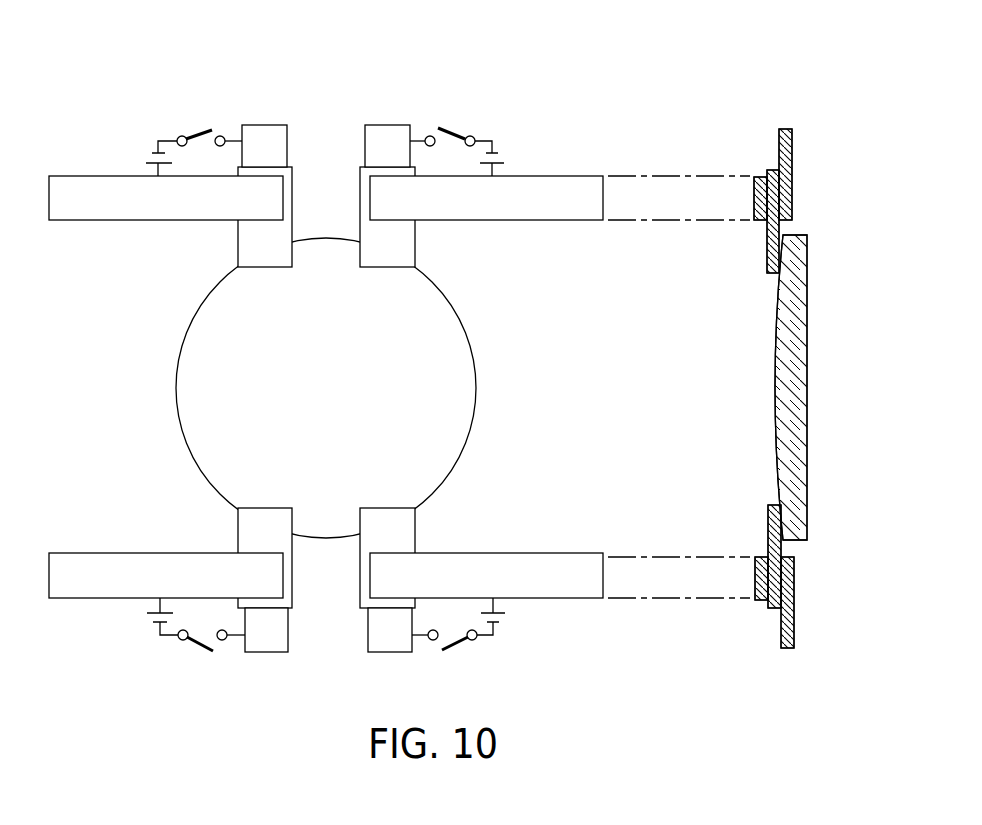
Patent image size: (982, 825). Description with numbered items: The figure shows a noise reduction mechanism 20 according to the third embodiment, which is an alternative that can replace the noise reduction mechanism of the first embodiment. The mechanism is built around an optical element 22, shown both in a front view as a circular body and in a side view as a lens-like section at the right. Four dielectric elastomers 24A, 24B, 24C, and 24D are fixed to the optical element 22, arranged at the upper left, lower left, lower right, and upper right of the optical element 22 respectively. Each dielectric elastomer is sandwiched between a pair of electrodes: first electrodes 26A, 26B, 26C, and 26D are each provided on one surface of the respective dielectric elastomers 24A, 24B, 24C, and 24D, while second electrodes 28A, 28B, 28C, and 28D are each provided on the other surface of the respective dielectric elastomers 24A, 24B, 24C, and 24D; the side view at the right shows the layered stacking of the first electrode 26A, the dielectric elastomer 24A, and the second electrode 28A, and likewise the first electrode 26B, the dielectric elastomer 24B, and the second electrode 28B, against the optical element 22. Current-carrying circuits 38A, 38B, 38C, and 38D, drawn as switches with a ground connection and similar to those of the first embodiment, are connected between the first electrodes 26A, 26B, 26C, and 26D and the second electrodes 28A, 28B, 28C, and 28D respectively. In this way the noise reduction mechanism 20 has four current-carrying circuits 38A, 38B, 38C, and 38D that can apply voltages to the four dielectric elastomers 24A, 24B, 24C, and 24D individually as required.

The noise reduction mechanism 20 is at (233, 56).
The optical element 22 is at (475, 380).
The dielectric elastomer 24A is at (238, 246).
The dielectric elastomer 24B is at (238, 534).
The dielectric elastomer 24C is at (415, 535).
The dielectric elastomer 24D is at (415, 248).
The first electrode 26A is at (268, 125).
The first electrode 26B is at (268, 652).
The first electrode 26C is at (390, 652).
The first electrode 26D is at (388, 125).
The second electrode 28A is at (88, 176).
The second electrode 28B is at (90, 598).
The second electrode 28C is at (561, 598).
The second electrode 28D is at (560, 176).
The current-carrying circuit 38A is at (180, 116).
The current-carrying circuit 38B is at (190, 660).
The current-carrying circuit 38C is at (469, 661).
The current-carrying circuit 38D is at (468, 115).